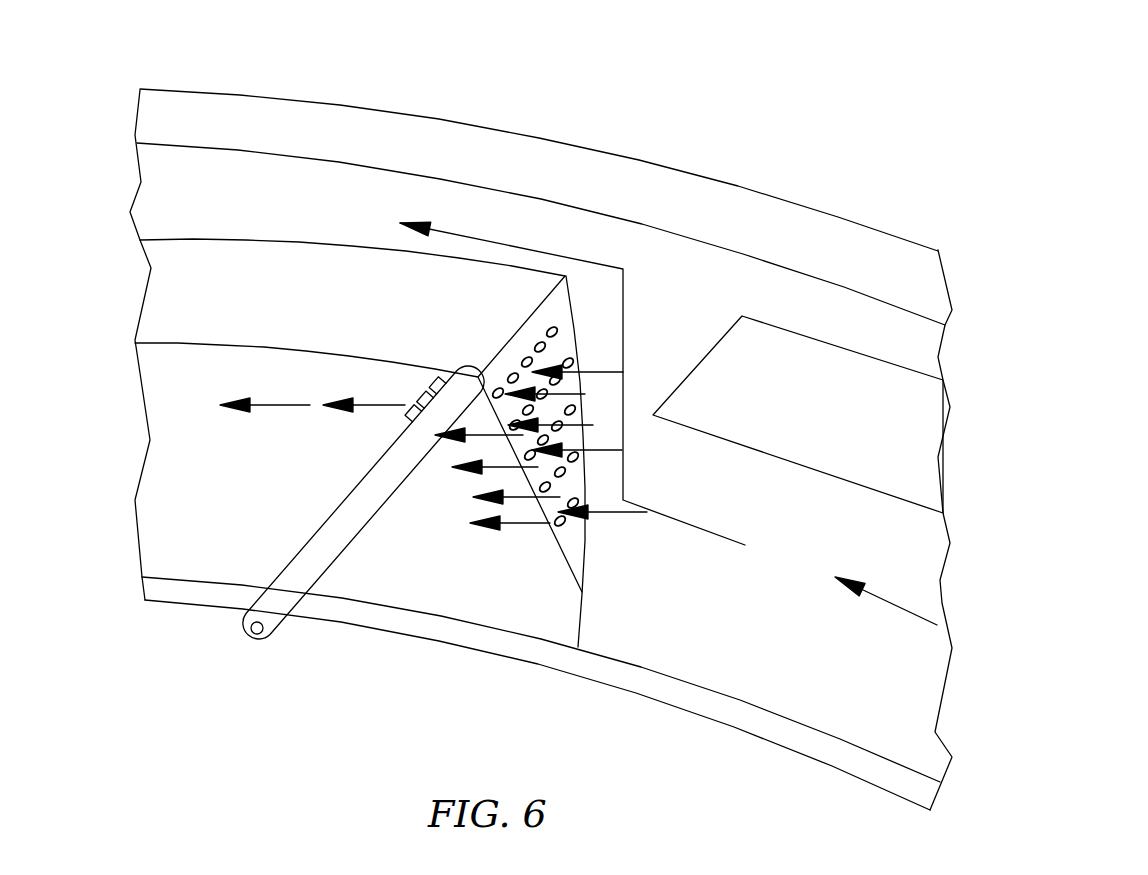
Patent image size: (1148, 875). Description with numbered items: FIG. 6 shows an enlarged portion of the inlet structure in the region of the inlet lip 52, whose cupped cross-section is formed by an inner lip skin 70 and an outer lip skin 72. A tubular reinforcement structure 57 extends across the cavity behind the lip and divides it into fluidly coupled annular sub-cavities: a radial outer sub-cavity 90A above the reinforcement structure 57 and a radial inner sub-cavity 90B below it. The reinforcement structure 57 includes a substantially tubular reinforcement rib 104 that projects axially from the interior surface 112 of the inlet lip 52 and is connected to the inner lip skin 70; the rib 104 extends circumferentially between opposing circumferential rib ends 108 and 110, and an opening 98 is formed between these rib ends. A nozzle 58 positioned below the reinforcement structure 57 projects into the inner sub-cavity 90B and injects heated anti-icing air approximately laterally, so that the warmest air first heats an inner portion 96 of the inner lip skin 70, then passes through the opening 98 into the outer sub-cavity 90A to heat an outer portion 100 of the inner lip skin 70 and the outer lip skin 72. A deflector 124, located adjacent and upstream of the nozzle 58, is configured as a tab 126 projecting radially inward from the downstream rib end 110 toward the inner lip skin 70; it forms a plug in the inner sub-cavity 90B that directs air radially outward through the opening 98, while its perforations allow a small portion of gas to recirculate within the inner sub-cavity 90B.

The inlet lip 52 is at (838, 434).
The reinforcement structure 57 is at (316, 243).
The nozzle 58 is at (333, 560).
The inner lip skin 70 is at (387, 640).
The outer lip skin 72 is at (433, 117).
The radial outer sub-cavity 90A is at (197, 199).
The radial inner sub-cavity 90B is at (195, 520).
The inner portion of the inner lip skin 96 is at (131, 422).
The opening 98 is at (650, 327).
The outer portion of the inner lip skin 100 is at (138, 182).
The reinforcement rib 104 is at (188, 299).
The circumferential rib end 108 is at (706, 345).
The circumferential rib end 110 is at (488, 461).
The interior surface of the inlet lip 112 is at (183, 367).
The deflector 124 is at (558, 553).
The tab 126 is at (572, 573).